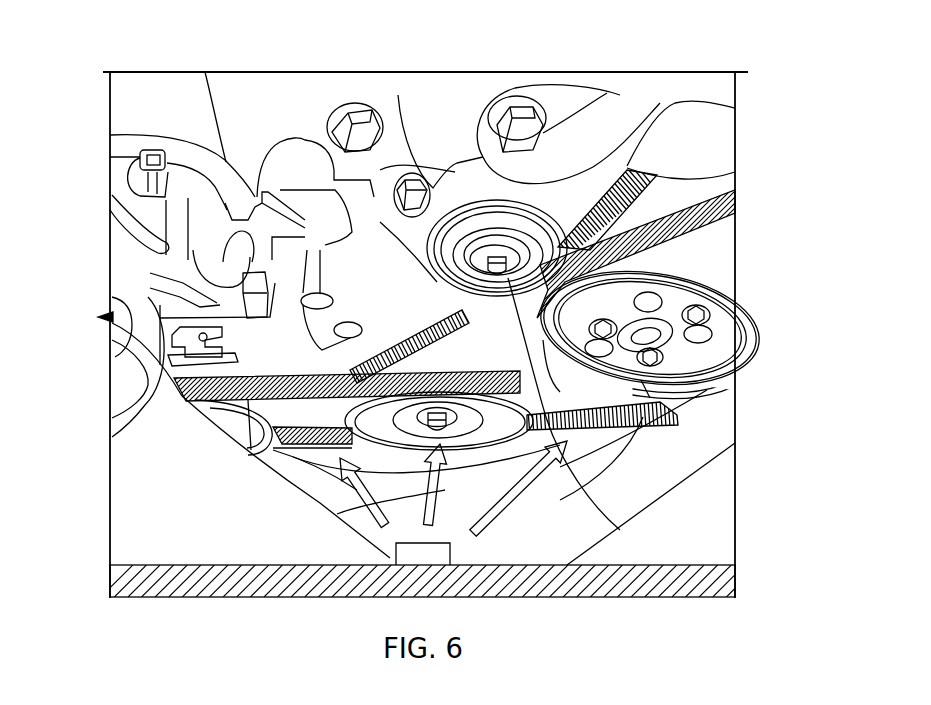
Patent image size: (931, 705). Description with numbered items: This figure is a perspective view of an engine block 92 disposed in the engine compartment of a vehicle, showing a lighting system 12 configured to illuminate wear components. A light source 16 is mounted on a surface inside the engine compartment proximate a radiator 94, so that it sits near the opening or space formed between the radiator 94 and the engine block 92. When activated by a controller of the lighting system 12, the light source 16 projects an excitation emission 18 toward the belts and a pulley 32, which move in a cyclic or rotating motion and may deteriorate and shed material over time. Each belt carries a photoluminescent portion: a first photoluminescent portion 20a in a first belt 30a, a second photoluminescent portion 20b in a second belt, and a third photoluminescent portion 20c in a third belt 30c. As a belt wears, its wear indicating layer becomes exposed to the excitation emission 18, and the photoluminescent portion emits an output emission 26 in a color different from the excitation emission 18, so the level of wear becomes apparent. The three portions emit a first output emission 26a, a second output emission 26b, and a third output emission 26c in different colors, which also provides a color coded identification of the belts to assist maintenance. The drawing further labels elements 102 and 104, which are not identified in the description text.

The lighting system 12 is at (598, 68).
The light source 16 is at (462, 553).
The excitation emission 18 is at (337, 514).
The first photoluminescent portion 20a is at (660, 256).
The second photoluminescent portion 20b is at (645, 420).
The third photoluminescent portion 20c is at (252, 400).
The output emission 26 is at (598, 237).
The first output emission 26a is at (734, 339).
The second output emission 26b is at (620, 432).
The third output emission 26c is at (242, 366).
The first belt 30a is at (649, 335).
The third belt 30c is at (439, 421).
The pulley 32 is at (578, 338).
The engine block 92 is at (322, 203).
The radiator 94 is at (132, 560).
The pulley hub 102 is at (652, 334).
The engine cover 104 is at (735, 178).